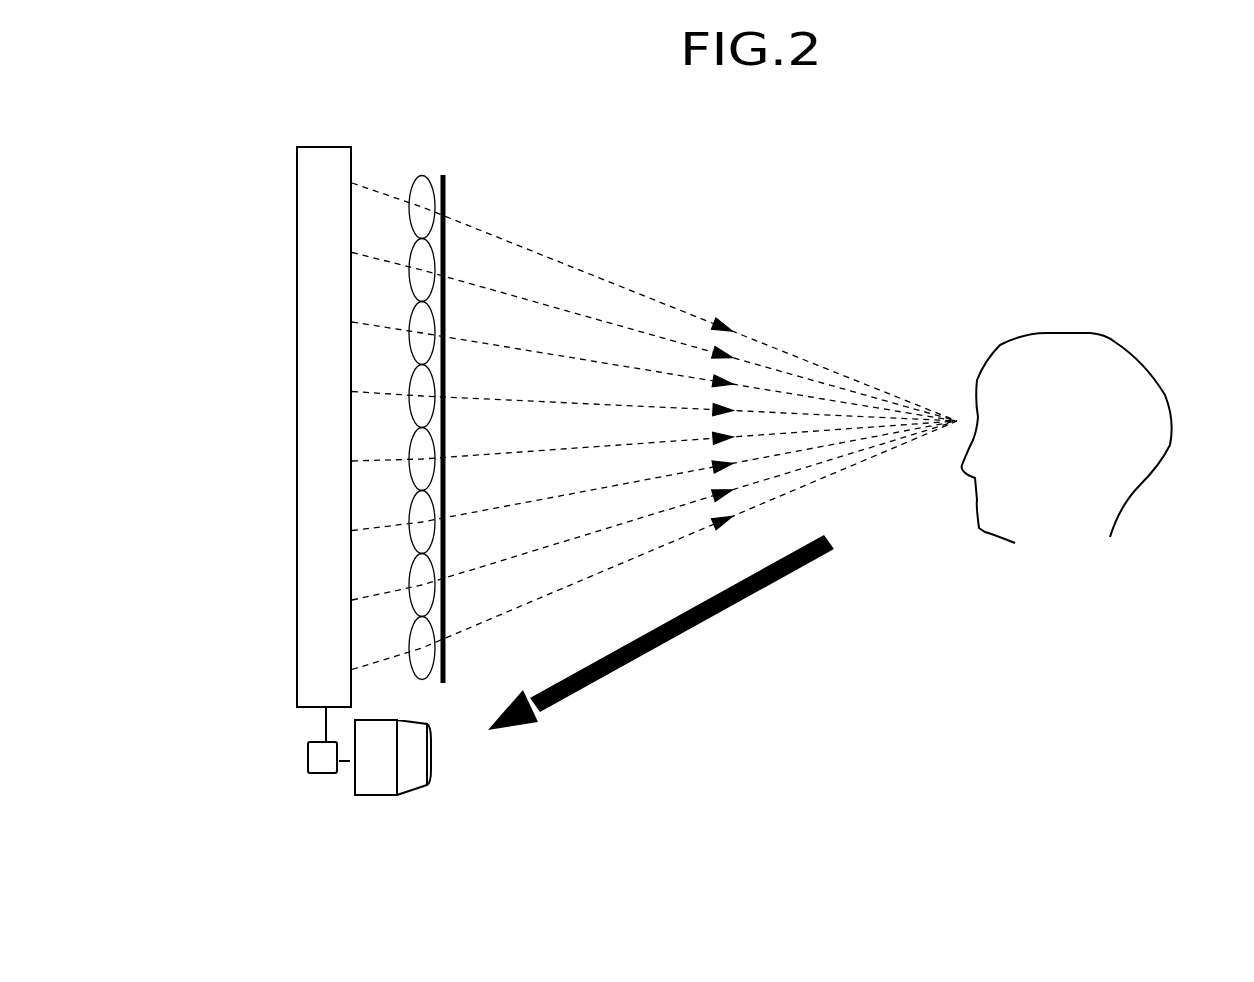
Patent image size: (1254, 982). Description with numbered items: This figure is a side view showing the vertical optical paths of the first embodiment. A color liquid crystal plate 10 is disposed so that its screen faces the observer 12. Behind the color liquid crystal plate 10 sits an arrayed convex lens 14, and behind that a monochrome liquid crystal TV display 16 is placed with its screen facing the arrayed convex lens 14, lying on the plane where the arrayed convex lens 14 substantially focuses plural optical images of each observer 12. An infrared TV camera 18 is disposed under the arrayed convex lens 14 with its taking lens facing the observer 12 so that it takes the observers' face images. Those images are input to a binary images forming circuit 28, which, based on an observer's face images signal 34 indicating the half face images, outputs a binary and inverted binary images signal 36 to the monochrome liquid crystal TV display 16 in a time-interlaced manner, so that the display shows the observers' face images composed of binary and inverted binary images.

The color liquid crystal plate 10 is at (450, 178).
The observer 12 is at (1153, 522).
The arrayed convex lens 14 is at (427, 172).
The monochrome liquid crystal TV display 16 is at (313, 317).
The infrared TV camera 18 is at (410, 801).
The binary images forming circuit 28 is at (318, 779).
The observer's face images signal 34 is at (348, 763).
The binary and inverted binary images signal 36 is at (313, 724).